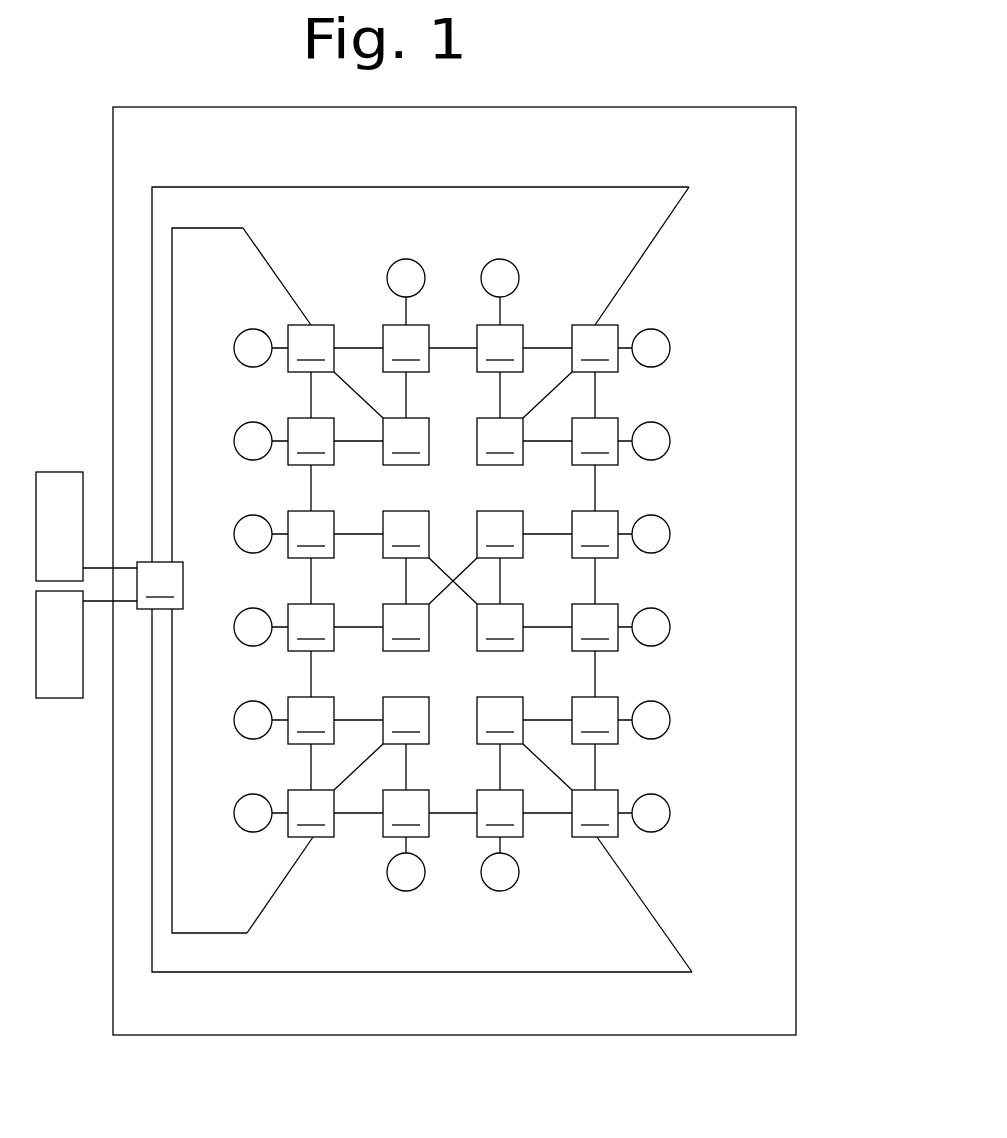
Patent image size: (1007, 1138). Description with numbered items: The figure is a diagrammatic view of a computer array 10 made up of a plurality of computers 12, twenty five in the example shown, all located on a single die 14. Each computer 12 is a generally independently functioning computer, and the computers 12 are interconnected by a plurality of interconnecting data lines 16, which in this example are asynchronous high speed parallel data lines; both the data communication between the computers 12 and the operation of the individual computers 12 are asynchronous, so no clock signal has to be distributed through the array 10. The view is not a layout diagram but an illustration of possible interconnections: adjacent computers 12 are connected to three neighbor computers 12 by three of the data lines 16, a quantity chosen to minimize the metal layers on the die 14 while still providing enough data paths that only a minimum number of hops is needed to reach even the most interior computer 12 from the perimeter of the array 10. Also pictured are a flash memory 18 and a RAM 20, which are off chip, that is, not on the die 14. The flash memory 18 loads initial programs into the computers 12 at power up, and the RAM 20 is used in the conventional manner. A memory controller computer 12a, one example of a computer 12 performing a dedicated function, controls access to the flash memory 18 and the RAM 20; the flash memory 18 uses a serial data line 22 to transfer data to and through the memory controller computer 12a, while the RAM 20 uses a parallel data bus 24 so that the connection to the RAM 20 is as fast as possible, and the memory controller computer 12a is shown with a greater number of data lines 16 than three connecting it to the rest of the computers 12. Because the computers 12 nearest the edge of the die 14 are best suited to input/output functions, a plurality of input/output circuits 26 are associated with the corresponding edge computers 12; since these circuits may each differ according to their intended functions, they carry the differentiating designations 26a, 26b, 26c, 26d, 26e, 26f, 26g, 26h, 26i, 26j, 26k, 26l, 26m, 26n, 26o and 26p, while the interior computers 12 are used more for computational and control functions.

The computer array 10 is at (458, 552).
The computer 12 is at (453, 581).
The memory controller computer 12a is at (179, 609).
The die 14 is at (473, 1013).
The interconnecting data lines 16 is at (670, 220).
The flash memory 18 is at (50, 472).
The RAM 20 is at (50, 698).
The serial data line 22 is at (95, 568).
The parallel data bus 24 is at (106, 603).
The input/output circuits 26 is at (472, 578).
The input/output circuit 26a is at (670, 348).
The input/output circuit 26b is at (670, 441).
The input/output circuit 26c is at (670, 534).
The input/output circuit 26d is at (670, 627).
The input/output circuit 26e is at (670, 720).
The input/output circuit 26f is at (670, 813).
The input/output circuit 26g is at (519, 877).
The input/output circuit 26h is at (387, 872).
The input/output circuit 26i is at (240, 800).
The input/output circuit 26j is at (258, 702).
The input/output circuit 26k is at (240, 615).
The input/output circuit 26l is at (240, 522).
The input/output circuit 26m is at (240, 429).
The input/output circuit 26n is at (239, 335).
The input/output circuit 26o is at (387, 278).
The input/output circuit 26p is at (514, 266).